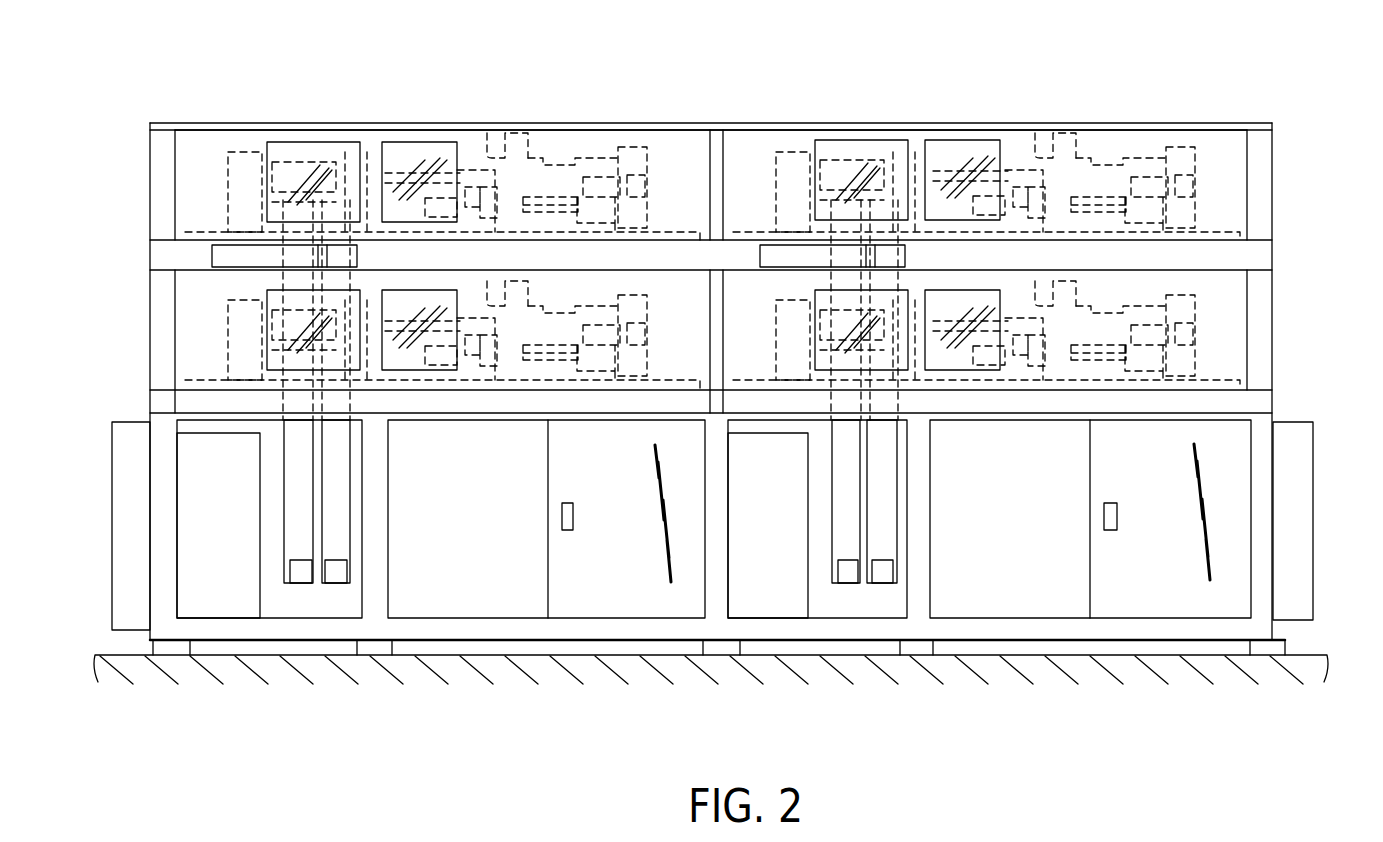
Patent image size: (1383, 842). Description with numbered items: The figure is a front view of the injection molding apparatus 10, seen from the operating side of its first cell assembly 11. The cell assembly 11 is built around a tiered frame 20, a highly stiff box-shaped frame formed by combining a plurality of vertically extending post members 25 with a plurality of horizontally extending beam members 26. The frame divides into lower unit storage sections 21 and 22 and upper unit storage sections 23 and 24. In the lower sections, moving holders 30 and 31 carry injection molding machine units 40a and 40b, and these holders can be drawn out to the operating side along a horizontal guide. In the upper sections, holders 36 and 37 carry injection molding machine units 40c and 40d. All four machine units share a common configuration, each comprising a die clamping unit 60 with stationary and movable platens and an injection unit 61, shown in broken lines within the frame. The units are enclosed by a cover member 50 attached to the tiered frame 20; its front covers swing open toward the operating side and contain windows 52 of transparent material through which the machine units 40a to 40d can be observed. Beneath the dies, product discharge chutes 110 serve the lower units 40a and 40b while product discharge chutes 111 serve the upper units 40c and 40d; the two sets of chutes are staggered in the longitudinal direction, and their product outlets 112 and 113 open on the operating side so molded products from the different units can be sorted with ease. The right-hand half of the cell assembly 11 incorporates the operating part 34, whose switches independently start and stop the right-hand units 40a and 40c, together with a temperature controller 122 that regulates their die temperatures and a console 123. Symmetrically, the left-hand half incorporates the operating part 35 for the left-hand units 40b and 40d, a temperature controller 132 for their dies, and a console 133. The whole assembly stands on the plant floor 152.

The injection molding apparatus 10 is at (1195, 103).
The first cell assembly 11 is at (453, 120).
The tiered frame 20 is at (150, 177).
The lower unit storage section 21 is at (1232, 297).
The lower unit storage section 22 is at (190, 323).
The upper unit storage section 23 is at (1232, 153).
The upper unit storage section 24 is at (190, 215).
The post member 25 is at (716, 130).
The beam member 26 is at (1265, 257).
The moving holder 30 is at (1208, 380).
The moving holder 31 is at (670, 380).
The operating part 34 is at (760, 258).
The operating part 35 is at (212, 258).
The holder 36 is at (1215, 232).
The holder 37 is at (677, 232).
The injection molding machine unit 40a is at (1125, 398).
The injection molding machine unit 40b is at (578, 398).
The injection molding machine unit 40c is at (1112, 158).
The injection molding machine unit 40d is at (578, 158).
The cover member 50 is at (205, 123).
The window 52 is at (405, 142).
The die clamping unit 60 is at (250, 150).
The injection unit 61 is at (487, 133).
The product discharge chute 110 is at (345, 490).
The product discharge chute 111 is at (292, 490).
The product outlet 112 is at (338, 572).
The product outlet 113 is at (300, 572).
The temperature controller 122 is at (770, 600).
The console 123 is at (1187, 600).
The temperature controller 132 is at (220, 605).
The console 133 is at (632, 605).
The plant floor 152 is at (1312, 652).